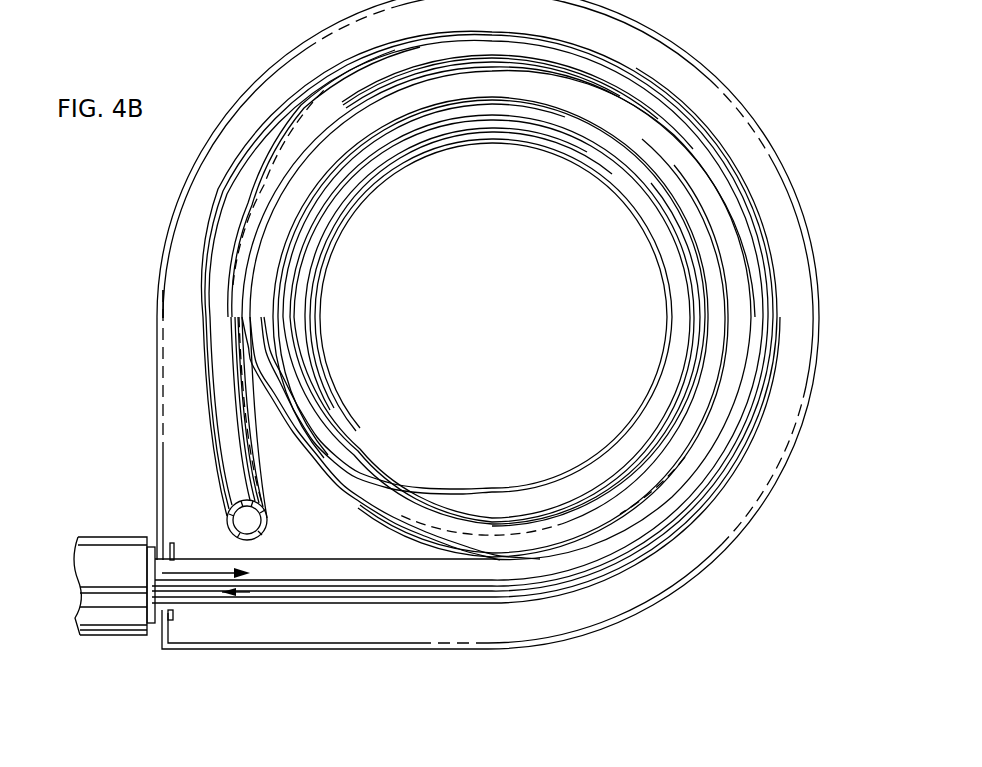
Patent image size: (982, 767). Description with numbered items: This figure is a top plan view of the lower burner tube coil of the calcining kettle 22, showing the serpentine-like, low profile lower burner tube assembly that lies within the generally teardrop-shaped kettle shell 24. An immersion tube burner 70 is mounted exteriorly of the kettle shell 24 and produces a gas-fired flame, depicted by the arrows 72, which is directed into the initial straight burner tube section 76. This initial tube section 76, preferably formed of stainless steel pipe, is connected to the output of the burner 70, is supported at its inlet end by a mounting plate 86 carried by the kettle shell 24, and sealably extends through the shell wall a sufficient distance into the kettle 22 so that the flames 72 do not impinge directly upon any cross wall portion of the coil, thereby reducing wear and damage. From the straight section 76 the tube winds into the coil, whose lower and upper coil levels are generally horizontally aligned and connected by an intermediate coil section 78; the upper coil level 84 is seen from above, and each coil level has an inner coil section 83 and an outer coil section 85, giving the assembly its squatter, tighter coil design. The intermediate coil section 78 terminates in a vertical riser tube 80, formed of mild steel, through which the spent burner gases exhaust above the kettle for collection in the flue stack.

The calcining kettle 22 is at (820, 255).
The kettle shell 24 is at (330, 651).
The immersion tube burner 70 is at (85, 537).
The gas-fired flame 72 is at (198, 597).
The initial tube section 76 is at (279, 582).
The intermediate coil section 78 is at (690, 342).
The vertical riser tube 80 is at (228, 516).
The inner coil section 83 is at (656, 278).
The upper coil level 84 is at (603, 540).
The outer coil section 85 is at (694, 523).
The mounting plate 86 is at (173, 556).